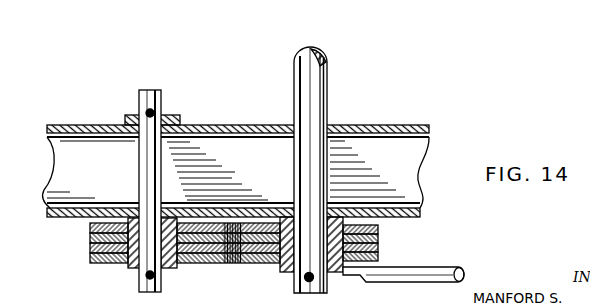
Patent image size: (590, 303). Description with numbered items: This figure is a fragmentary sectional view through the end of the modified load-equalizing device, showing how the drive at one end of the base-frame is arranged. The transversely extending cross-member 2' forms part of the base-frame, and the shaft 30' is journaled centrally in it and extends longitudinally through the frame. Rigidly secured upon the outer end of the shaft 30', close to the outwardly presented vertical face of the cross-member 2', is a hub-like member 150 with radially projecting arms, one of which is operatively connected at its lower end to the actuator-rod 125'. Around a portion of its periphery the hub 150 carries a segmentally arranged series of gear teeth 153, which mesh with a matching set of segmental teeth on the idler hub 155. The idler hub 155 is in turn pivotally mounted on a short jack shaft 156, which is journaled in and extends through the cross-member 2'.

The cross-member 2' is at (238, 152).
The shaft 30' is at (334, 170).
The actuator-rod 125' is at (417, 259).
The hub-like member 150 is at (282, 272).
The gear teeth 153 is at (237, 264).
The idler hub 155 is at (128, 269).
The jack shaft 156 is at (157, 90).